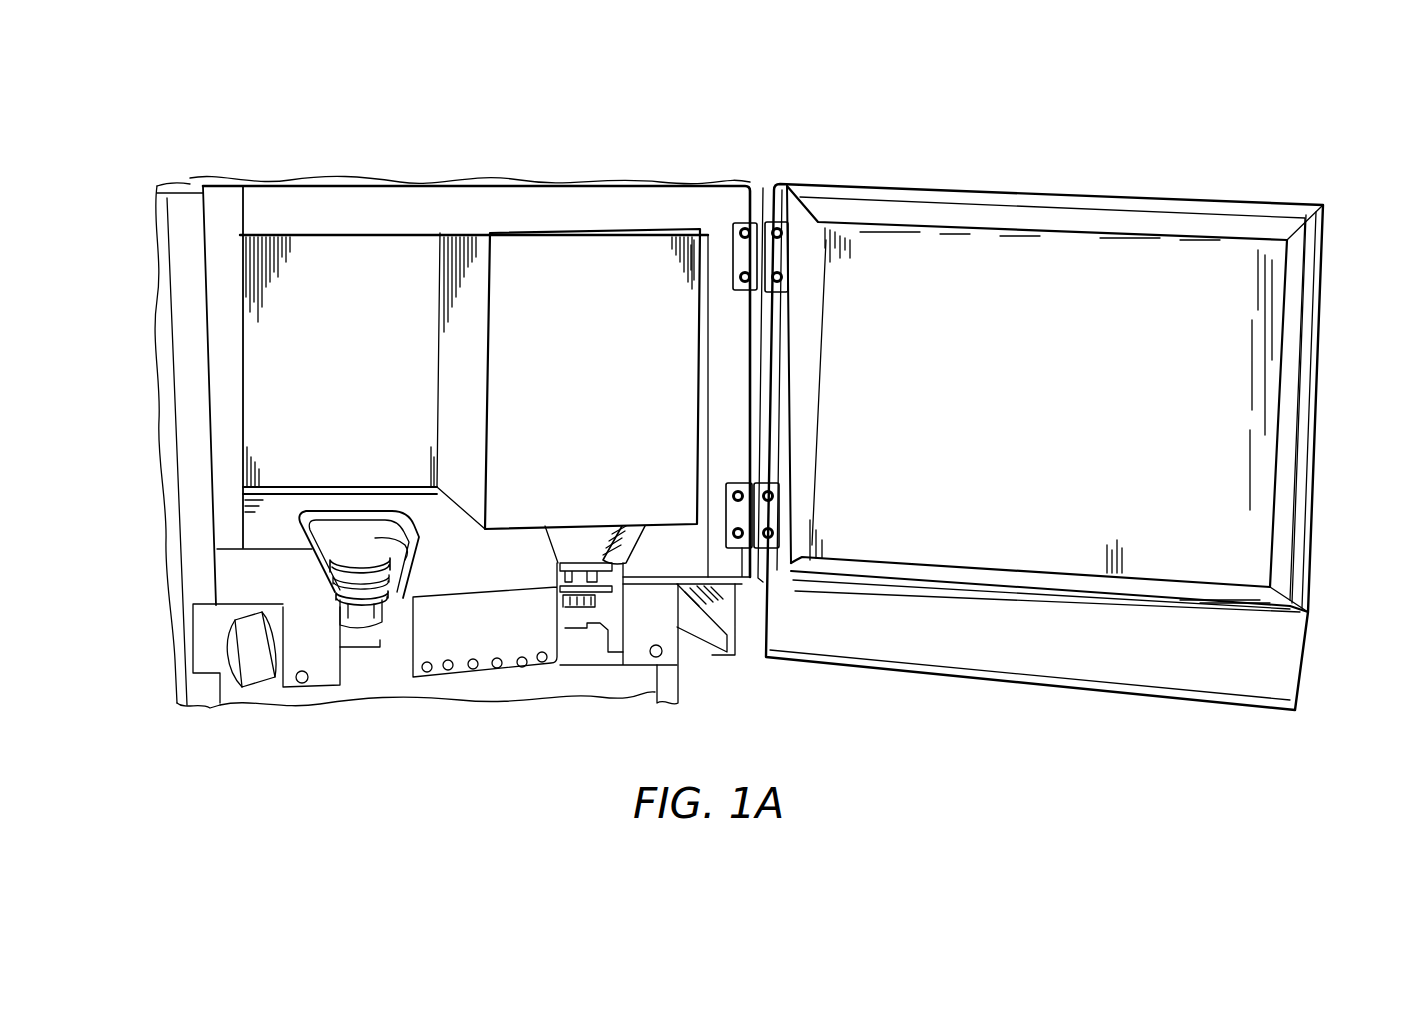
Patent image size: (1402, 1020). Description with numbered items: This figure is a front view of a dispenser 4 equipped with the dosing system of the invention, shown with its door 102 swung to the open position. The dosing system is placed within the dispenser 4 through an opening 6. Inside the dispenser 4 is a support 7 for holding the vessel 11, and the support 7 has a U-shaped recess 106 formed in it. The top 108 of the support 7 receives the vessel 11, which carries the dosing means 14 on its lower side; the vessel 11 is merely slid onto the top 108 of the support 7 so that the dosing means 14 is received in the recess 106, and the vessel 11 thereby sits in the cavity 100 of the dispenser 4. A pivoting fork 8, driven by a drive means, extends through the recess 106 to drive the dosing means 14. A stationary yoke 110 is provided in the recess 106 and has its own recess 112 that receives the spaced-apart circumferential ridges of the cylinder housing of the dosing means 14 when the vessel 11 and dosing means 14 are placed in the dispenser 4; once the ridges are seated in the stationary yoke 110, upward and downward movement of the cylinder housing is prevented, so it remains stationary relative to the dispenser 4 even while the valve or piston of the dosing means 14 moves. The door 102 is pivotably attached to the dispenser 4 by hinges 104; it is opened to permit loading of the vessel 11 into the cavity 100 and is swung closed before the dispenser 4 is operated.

The dispenser 4 is at (285, 130).
The opening 6 is at (275, 302).
The support 7 is at (252, 533).
The pivoting fork 8 is at (364, 626).
The vessel 11 is at (508, 436).
The dosing means 14 is at (620, 609).
The cavity 100 is at (375, 265).
The door 102 is at (967, 243).
The hinges 104 is at (764, 200).
The U-shaped recess 106 is at (377, 541).
The top of support 108 is at (300, 498).
The stationary yoke 110 is at (338, 588).
The recess of stationary yoke 112 is at (385, 604).